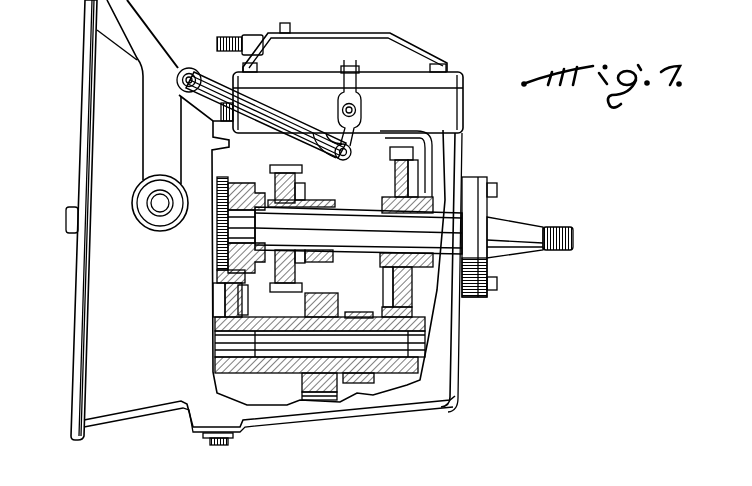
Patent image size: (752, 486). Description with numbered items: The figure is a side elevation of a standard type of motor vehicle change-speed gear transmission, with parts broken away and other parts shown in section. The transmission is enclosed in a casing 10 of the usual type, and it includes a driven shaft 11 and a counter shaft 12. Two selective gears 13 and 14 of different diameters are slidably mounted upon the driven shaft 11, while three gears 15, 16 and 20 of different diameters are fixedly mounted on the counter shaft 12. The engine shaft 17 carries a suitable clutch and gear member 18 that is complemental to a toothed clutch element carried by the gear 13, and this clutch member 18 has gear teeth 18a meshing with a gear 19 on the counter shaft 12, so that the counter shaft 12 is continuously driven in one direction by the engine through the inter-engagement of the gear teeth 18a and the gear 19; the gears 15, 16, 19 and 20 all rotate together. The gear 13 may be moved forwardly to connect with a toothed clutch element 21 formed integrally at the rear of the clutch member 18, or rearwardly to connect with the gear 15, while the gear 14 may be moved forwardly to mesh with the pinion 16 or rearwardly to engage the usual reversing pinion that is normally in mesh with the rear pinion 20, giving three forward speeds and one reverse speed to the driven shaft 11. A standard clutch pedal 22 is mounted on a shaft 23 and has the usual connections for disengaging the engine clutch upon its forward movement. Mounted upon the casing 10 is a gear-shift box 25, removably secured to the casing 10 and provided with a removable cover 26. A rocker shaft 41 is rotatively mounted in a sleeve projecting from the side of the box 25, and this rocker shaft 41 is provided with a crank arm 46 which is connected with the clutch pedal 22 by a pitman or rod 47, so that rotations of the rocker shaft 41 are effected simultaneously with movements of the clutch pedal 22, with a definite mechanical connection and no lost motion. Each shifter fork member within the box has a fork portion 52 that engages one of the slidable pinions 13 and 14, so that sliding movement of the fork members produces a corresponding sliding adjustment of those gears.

The casing 10 is at (440, 378).
The driven shaft 11 is at (344, 214).
The counter shaft 12 is at (302, 363).
The selective gear 13 is at (326, 134).
The selective gear 14 is at (395, 150).
The gear 15 is at (338, 312).
The pinion 16 is at (362, 313).
The engine shaft 17 is at (70, 226).
The clutch and gear member 18 is at (210, 187).
The gear teeth 18a is at (237, 186).
The gear 19 is at (216, 302).
The rear pinion 20 is at (427, 322).
The toothed clutch element 21 is at (215, 271).
The clutch pedal 22 is at (147, 38).
The shaft 23 is at (158, 211).
The gear-shift box 25 is at (470, 122).
The removable cover 26 is at (442, 63).
The rocker shaft 41 is at (357, 110).
The crank arm 46 is at (337, 117).
The pitman or rod 47 is at (275, 112).
The fork portion 52 is at (320, 170).